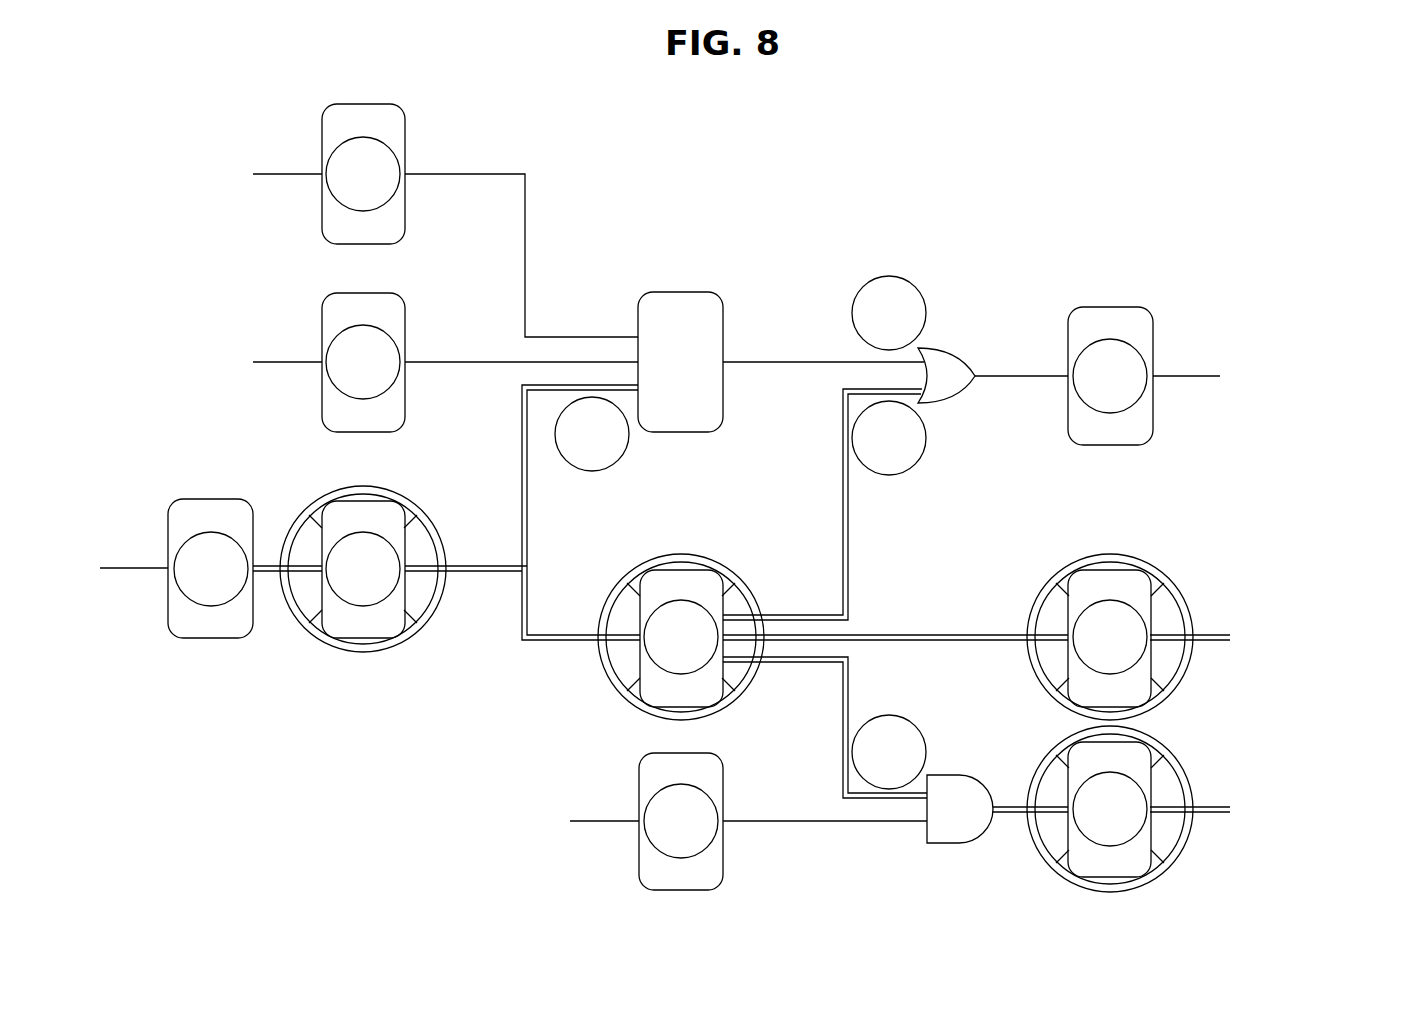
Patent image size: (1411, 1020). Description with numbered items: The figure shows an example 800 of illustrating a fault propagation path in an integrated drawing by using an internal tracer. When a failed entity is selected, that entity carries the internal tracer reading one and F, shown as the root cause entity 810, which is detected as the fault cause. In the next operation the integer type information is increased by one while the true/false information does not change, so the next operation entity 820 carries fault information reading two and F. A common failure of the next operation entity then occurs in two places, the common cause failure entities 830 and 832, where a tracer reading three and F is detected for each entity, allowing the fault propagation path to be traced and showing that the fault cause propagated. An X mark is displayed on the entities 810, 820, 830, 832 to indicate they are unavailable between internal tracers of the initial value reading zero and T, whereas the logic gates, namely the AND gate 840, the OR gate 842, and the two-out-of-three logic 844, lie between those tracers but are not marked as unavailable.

The fault propagation path example 800 is at (1122, 169).
The failed entity with internal tracer (1, F) 810 is at (415, 502).
The next operation entity with internal tracer (2, F) 820 is at (732, 570).
The common failure entity with internal tracer (3, F) 830 is at (1160, 570).
The common failure entity with internal tracer (3, F) 832 is at (1160, 742).
The AND logic gate 840 is at (943, 775).
The OR logic gate 842 is at (942, 345).
The 2 out of 3 logic gate 844 is at (685, 292).